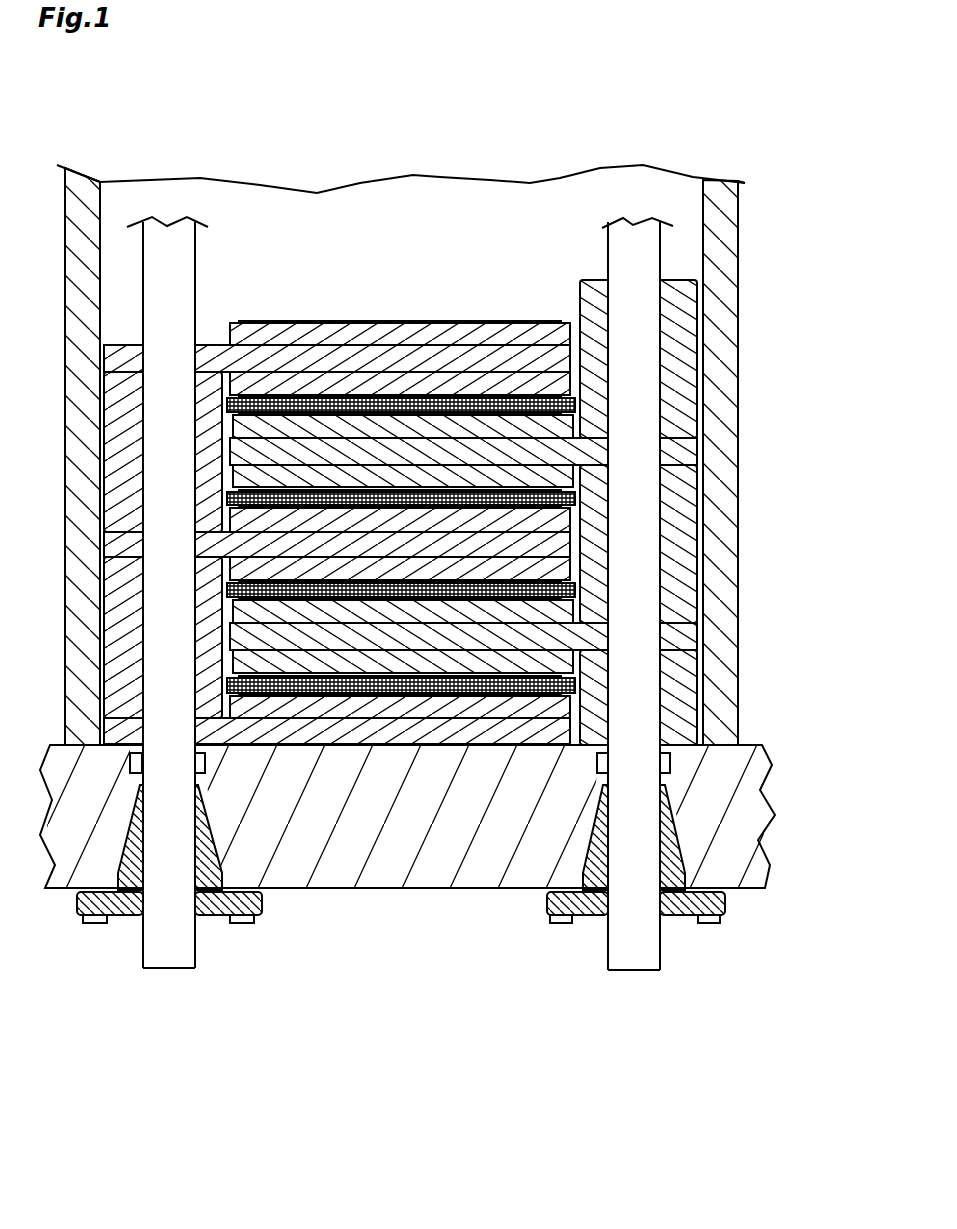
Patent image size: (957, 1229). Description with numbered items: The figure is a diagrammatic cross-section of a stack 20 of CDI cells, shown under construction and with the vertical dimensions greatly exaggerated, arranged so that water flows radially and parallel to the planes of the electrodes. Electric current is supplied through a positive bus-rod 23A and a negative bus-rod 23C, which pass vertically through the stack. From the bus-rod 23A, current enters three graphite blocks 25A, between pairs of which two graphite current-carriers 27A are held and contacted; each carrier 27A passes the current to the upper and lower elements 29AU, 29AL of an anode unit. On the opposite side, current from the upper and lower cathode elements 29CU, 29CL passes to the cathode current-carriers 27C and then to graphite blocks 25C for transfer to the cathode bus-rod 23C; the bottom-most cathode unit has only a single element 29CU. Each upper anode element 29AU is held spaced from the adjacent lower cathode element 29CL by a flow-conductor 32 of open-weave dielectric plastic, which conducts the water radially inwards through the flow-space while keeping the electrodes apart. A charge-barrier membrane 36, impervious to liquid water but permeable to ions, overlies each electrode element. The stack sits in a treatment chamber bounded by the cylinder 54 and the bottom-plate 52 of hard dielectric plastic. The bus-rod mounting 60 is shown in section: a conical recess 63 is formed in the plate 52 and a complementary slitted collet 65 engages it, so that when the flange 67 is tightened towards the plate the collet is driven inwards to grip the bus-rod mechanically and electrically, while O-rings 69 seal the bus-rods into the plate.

The stack of CDI cells 20 is at (299, 186).
The bus-rod 23A is at (165, 255).
The bus-rod 23C is at (637, 255).
The graphite blocks 25A is at (124, 498).
The graphite blocks 25C is at (680, 688).
The graphite current-carriers 27A is at (365, 360).
The cathode current-carriers 27C is at (680, 452).
The upper element 29AU is at (317, 338).
The lower element 29AL is at (437, 382).
The upper cathode element 29CU is at (338, 613).
The lower cathode element 29CL is at (397, 660).
The flow-conductor 32 is at (552, 406).
The membrane 36 is at (258, 319).
The bottom-plate 52 is at (747, 762).
The cylinder 54 is at (723, 323).
The bus-rod mounting 60 is at (673, 918).
The conical recess 63 is at (212, 905).
The collet 65 is at (136, 866).
The flange 67 is at (728, 910).
The O-rings 69 is at (130, 766).